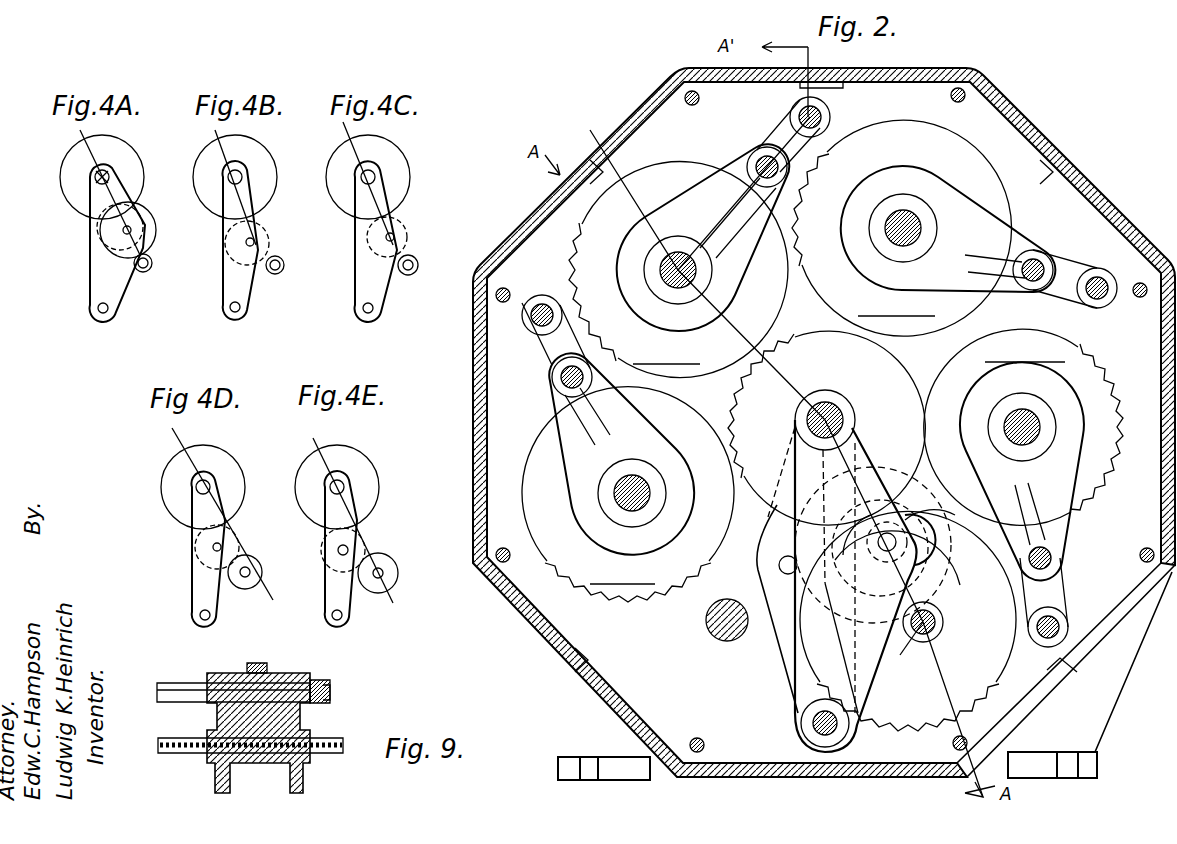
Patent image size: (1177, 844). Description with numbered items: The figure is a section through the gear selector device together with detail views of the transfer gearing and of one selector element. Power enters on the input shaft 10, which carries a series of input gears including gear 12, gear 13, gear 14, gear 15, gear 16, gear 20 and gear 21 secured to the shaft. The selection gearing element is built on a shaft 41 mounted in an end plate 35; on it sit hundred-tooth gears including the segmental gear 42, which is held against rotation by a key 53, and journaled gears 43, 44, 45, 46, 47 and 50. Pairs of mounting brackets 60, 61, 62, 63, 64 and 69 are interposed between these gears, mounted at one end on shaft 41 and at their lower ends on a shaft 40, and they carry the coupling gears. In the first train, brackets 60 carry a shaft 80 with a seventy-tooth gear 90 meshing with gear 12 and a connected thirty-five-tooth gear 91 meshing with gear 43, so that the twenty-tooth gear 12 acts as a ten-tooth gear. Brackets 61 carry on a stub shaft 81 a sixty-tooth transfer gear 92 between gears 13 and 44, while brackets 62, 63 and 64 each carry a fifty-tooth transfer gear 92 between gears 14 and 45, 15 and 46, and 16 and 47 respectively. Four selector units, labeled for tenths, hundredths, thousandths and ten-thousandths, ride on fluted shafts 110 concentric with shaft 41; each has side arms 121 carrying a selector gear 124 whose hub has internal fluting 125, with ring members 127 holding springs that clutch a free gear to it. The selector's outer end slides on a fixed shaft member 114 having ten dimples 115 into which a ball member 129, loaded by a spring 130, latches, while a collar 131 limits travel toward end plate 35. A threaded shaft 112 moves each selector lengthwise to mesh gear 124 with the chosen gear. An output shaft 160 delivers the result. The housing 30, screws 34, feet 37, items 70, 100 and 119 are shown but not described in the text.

In FIG. 2, the input shaft 10 is at (945, 625).
In FIG. 4A, the input shaft 10 is at (142, 272).
In FIG. 4D, the input shaft 10 is at (255, 585).
In FIG. 9, the input shaft 10 is at (330, 686).
In FIG. 2, the input gear 12 is at (911, 650).
In FIG. 4A, the input gear 12 is at (150, 268).
In FIG. 4B, the input gear 13 is at (275, 275).
In FIG. 4C, the input gear 14 is at (408, 276).
In FIG. 4D, the input gear 15 is at (242, 590).
In FIG. 4E, the input gear 16 is at (378, 595).
In FIG. 2, the input gear 20 is at (908, 621).
In FIG. 2, the input gear 21 is at (889, 744).
In FIG. 2, the housing 30 is at (985, 100).
In FIG. 2, the screw 34 is at (700, 98).
In FIG. 9, the screw 34 is at (180, 703).
In FIG. 2, the end plate 35 is at (873, 545).
In FIG. 2, the foot 37 is at (557, 767).
In FIG. 2, the shaft 40 is at (800, 718).
In FIG. 4A, the shaft 40 is at (100, 314).
In FIG. 4D, the shaft 40 is at (200, 618).
In FIG. 2, the shaft 41 is at (830, 410).
In FIG. 4A, the shaft 41 is at (110, 172).
In FIG. 4D, the shaft 41 is at (212, 480).
In FIG. 2, the segmental gear 42 is at (768, 468).
In FIG. 2, the selection gear 43 is at (772, 518).
In FIG. 4A, the selection gear 43 is at (65, 175).
In FIG. 4B, the selection gear 44 is at (215, 158).
In FIG. 4C, the selection gear 45 is at (335, 160).
In FIG. 4D, the selection gear 46 is at (168, 452).
In FIG. 4E, the selection gear 47 is at (345, 452).
In FIG. 2, the selection gear 50 is at (800, 571).
In FIG. 2, the key 53 is at (848, 418).
In FIG. 2, the mounting bracket 60 is at (805, 672).
In FIG. 4A, the mounting bracket 60 is at (90, 278).
In FIG. 4B, the mounting bracket 61 is at (223, 278).
In FIG. 4C, the mounting bracket 62 is at (355, 268).
In FIG. 4D, the mounting bracket 63 is at (192, 572).
In FIG. 4E, the mounting bracket 64 is at (325, 592).
In FIG. 2, the mounting bracket 69 is at (770, 636).
In FIG. 2, the cam 70 is at (948, 560).
In FIG. 4A, the shaft 80 is at (140, 215).
In FIG. 4B, the stub shaft 81 is at (258, 215).
In FIG. 4D, the stub shaft 81 is at (230, 545).
In FIG. 2, the reduction gear 90 is at (948, 560).
In FIG. 4A, the reduction gear 90 is at (155, 236).
In FIG. 2, the spur gear 91 is at (905, 522).
In FIG. 4A, the spur gear 91 is at (110, 232).
In FIG. 2, the transfer gear 92 is at (745, 575).
In FIG. 4B, the transfer gear 92 is at (262, 240).
In FIG. 4C, the transfer gear 92 is at (400, 235).
In FIG. 4D, the transfer gear 92 is at (240, 550).
In FIG. 4E, the transfer gear 92 is at (362, 547).
In FIG. 2, the gear 100 is at (948, 489).
In FIG. 2, the shaft 110 is at (745, 210).
In FIG. 2, the threaded shaft 112 is at (752, 150).
In FIG. 9, the threaded shaft 112 is at (178, 755).
In FIG. 2, the fixed shaft member 114 is at (1098, 270).
In FIG. 9, the fixed shaft member 114 is at (160, 704).
In FIG. 9, the dimple 115 is at (175, 686).
In FIG. 2, the pin 119 is at (830, 108).
In FIG. 2, the side arm 121 is at (745, 160).
In FIG. 9, the side arm 121 is at (316, 776).
In FIG. 2, the selector gear 124 is at (640, 200).
In FIG. 2, the internal fluting 125 is at (660, 270).
In FIG. 2, the ring member 127 is at (1033, 260).
In FIG. 2, the ball member 129 is at (540, 297).
In FIG. 9, the ball member 129 is at (275, 672).
In FIG. 9, the spring 130 is at (260, 665).
In FIG. 9, the collar 131 is at (318, 703).
In FIG. 2, the output shaft 160 is at (712, 632).